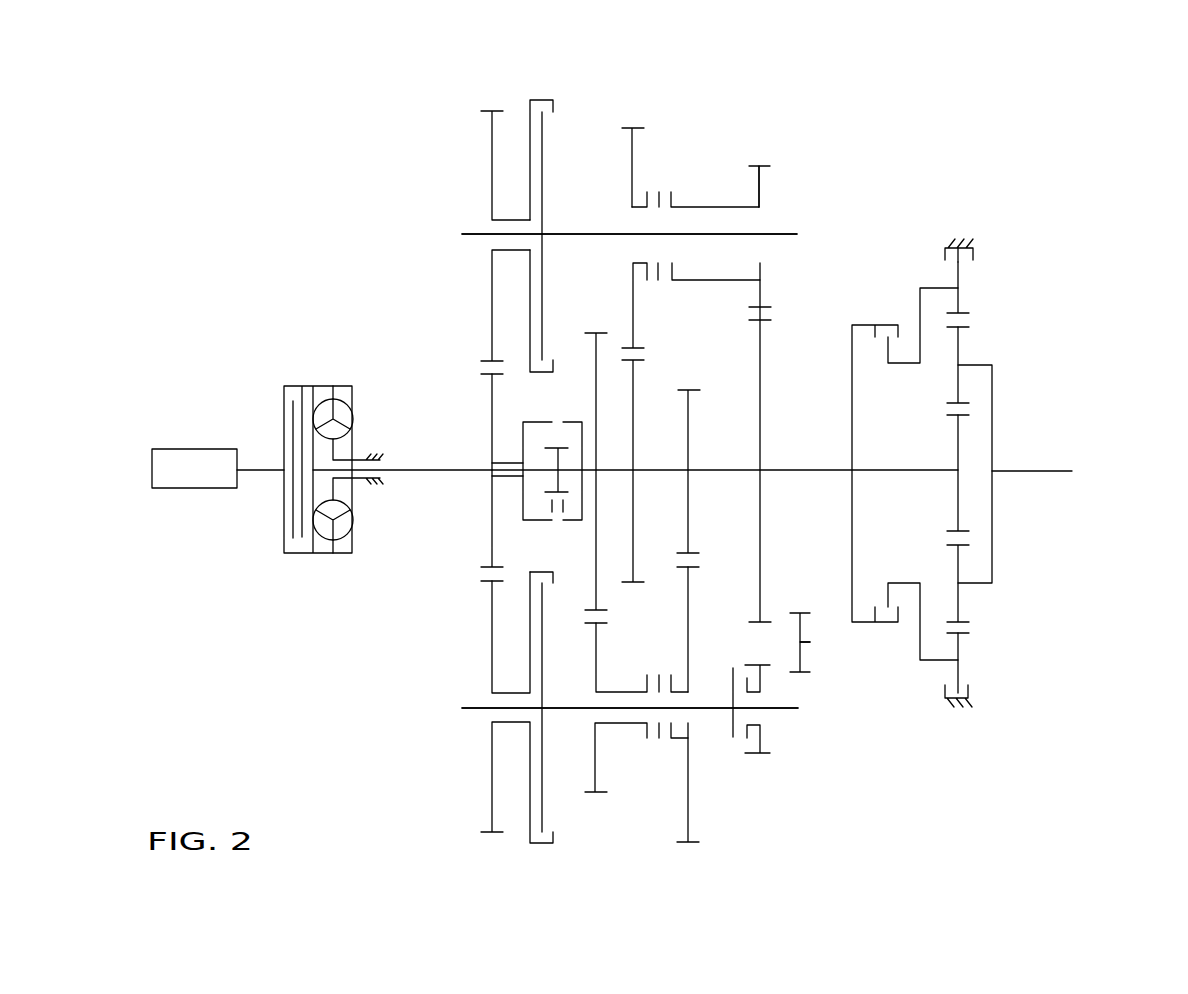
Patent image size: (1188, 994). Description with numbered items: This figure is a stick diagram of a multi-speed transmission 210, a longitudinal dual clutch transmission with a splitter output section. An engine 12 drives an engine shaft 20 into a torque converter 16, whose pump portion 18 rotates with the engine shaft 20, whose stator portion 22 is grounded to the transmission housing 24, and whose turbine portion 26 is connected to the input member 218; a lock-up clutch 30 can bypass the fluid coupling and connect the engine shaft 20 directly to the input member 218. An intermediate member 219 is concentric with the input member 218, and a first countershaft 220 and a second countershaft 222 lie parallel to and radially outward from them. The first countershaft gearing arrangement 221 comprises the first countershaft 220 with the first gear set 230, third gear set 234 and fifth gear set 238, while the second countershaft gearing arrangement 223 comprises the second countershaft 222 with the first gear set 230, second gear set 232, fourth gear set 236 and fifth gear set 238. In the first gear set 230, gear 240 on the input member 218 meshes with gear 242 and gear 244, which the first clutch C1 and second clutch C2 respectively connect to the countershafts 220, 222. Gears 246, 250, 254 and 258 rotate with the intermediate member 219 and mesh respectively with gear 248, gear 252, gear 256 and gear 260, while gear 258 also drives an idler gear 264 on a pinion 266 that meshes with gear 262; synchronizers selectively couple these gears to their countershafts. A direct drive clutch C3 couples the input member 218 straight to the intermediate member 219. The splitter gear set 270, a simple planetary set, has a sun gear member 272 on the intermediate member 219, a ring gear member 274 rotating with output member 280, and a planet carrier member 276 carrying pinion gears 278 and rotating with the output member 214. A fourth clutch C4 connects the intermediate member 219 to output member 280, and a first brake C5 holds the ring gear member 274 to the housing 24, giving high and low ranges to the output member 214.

The engine 12 is at (197, 449).
The torque converter 16 is at (307, 380).
The pump portion 18 is at (349, 411).
The engine shaft 20 is at (267, 470).
The stator portion 22 is at (340, 433).
The transmission housing 24 is at (377, 482).
The turbine portion 26 is at (328, 400).
The lock-up clutch 30 is at (284, 405).
The multi-speed transmission 210 is at (965, 118).
The output member 214 is at (1047, 470).
The input member 218 is at (438, 468).
The intermediate member 219 is at (735, 473).
The first countershaft 220 is at (463, 236).
The first countershaft gearing arrangement 221 is at (452, 234).
The second countershaft 222 is at (465, 711).
The second countershaft gearing arrangement 223 is at (452, 708).
The first gear set 230 is at (492, 838).
The second gear set 232 is at (596, 800).
The third gear set 234 is at (632, 118).
The fourth gear set 236 is at (688, 850).
The fifth gear set 238 is at (759, 155).
The gear 240 is at (492, 528).
The gear 242 is at (492, 308).
The gear 244 is at (492, 608).
The gear 246 is at (596, 355).
The gear 248 is at (597, 645).
The gear 250 is at (657, 447).
The gear 252 is at (632, 184).
The gear 254 is at (690, 462).
The gear 256 is at (713, 612).
The gear 258 is at (762, 420).
The gear 260 is at (760, 187).
The gear 262 is at (762, 740).
The idler gear 264 is at (803, 655).
The pinion 266 is at (803, 642).
The splitter gear set 270 is at (1090, 297).
The sun gear member 272 is at (958, 505).
The ring gear member 274 is at (960, 297).
The planet carrier member 276 is at (993, 410).
The pinion gears 278 is at (960, 351).
The output member 280 is at (904, 366).
The first clutch C1 is at (541, 222).
The second clutch C2 is at (541, 690).
The direct drive clutch C3 is at (552, 461).
The fourth clutch C4 is at (959, 460).
The first brake C5 is at (875, 462).